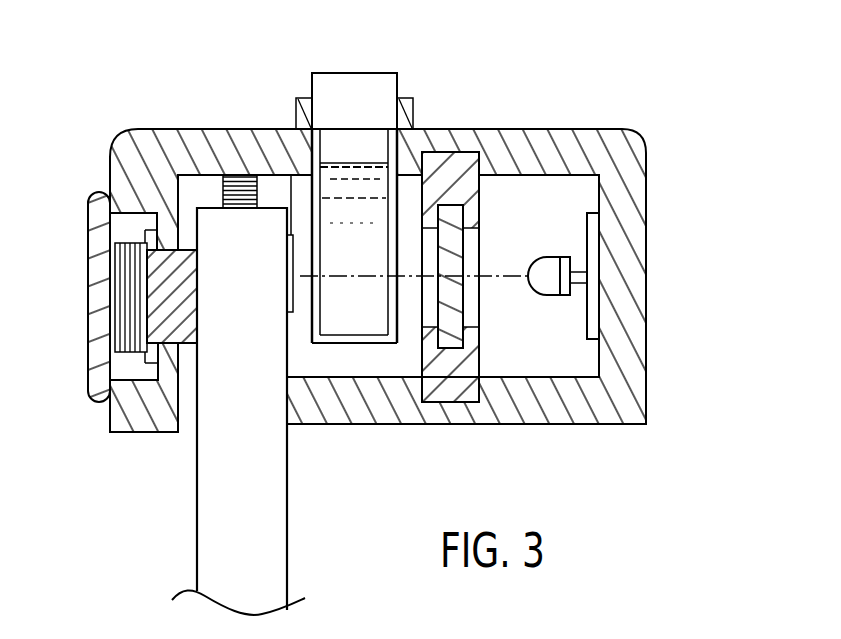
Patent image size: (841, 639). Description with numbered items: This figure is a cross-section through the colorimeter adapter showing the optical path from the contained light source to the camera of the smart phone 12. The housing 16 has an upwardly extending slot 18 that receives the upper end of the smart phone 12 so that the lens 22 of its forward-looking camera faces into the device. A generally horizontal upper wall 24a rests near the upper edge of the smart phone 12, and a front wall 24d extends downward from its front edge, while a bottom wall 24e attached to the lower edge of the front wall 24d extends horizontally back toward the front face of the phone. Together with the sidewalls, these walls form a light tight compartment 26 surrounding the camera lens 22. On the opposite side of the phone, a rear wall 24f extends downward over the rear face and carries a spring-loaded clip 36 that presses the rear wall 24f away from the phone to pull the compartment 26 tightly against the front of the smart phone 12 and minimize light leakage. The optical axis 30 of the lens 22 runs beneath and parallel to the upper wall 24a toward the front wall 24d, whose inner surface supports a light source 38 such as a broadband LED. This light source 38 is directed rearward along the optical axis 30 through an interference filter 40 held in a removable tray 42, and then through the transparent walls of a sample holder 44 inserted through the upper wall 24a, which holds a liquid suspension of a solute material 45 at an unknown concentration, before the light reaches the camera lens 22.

The smart phone 12 is at (262, 543).
The housing 16 is at (647, 158).
The slot 18 is at (186, 452).
The lens 22 is at (291, 233).
The upper wall 24a is at (490, 129).
The front wall 24d is at (647, 300).
The bottom wall 24e is at (530, 424).
The rear wall 24f is at (88, 298).
The light tight compartment 26 is at (578, 360).
The optical axis 30 is at (494, 280).
The spring-loaded clip 36 is at (155, 332).
The light source 38 is at (551, 257).
The interference filter 40 is at (467, 298).
The removable tray 42 is at (453, 158).
The sample holder 44 is at (355, 44).
The solute material 45 is at (345, 322).